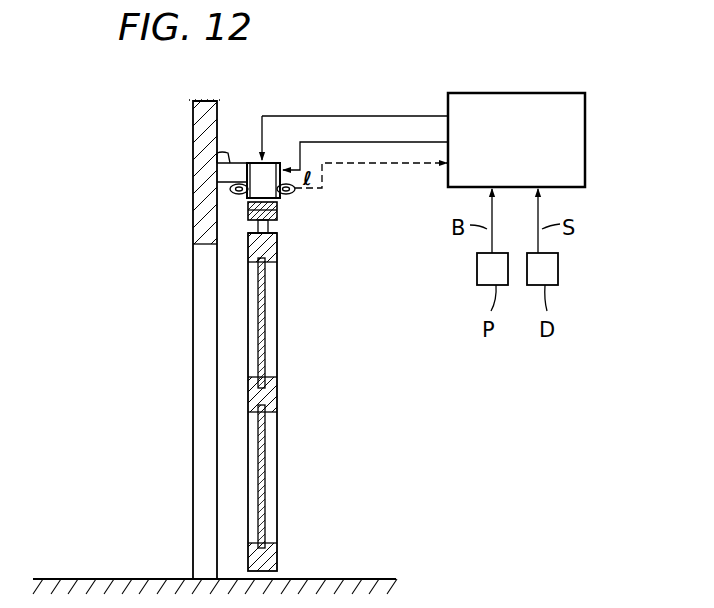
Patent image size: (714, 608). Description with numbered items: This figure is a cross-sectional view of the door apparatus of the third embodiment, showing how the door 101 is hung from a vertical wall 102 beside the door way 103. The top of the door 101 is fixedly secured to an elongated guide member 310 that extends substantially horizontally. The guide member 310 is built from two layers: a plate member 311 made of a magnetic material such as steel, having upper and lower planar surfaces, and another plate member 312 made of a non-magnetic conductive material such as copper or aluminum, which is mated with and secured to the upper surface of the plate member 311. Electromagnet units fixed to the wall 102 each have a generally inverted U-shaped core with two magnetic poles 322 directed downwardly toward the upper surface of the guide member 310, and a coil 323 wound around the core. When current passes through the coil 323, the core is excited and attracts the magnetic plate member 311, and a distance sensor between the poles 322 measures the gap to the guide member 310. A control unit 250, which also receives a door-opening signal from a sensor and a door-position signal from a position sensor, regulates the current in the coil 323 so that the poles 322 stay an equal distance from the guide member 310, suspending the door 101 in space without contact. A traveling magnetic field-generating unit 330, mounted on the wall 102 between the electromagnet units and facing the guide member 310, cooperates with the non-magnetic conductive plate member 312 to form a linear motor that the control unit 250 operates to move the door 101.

The door 101 is at (279, 397).
The vertical wall 102 is at (195, 121).
The door way 103 is at (210, 244).
The control unit 250 is at (587, 132).
The guide member 310 is at (283, 237).
The plate member 311 is at (251, 223).
The plate member 312 is at (281, 222).
The magnetic poles 322 is at (279, 205).
The coil 323 is at (235, 191).
The traveling magnetic field-generating unit 330 is at (271, 161).